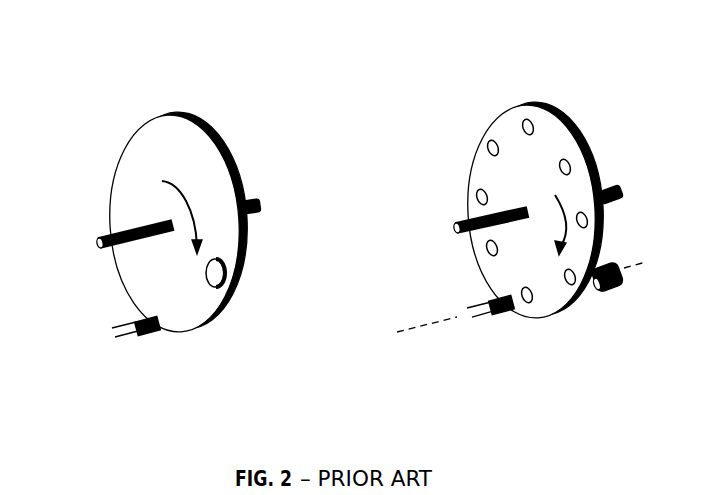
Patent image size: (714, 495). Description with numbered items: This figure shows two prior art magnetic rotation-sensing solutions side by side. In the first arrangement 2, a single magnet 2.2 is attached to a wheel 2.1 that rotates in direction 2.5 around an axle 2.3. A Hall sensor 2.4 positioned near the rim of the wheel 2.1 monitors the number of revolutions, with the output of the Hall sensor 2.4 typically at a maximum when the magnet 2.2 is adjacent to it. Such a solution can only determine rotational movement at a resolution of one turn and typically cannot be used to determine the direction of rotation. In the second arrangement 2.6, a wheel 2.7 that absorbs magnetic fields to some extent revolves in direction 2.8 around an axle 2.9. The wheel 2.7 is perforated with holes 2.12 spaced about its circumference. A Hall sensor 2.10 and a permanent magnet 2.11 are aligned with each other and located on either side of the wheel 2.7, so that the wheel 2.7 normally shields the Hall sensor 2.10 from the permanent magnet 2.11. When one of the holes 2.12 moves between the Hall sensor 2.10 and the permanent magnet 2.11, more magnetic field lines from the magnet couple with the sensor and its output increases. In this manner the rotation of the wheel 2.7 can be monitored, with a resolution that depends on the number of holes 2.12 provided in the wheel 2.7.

The single-magnet prior art arrangement 2 is at (149, 210).
The wheel 2.1 is at (154, 221).
The single magnet 2.2 is at (187, 276).
The axle 2.3 is at (105, 254).
The Hall sensor 2.4 is at (125, 357).
The direction of rotation 2.5 is at (175, 194).
The perforated-wheel prior art arrangement 2.6 is at (514, 190).
The wheel 2.7 is at (515, 209).
The direction of rotation 2.8 is at (539, 230).
The axle 2.9 is at (465, 241).
The Hall sensor 2.10 is at (490, 334).
The permanent magnet 2.11 is at (610, 309).
The holes 2.12 is at (508, 182).